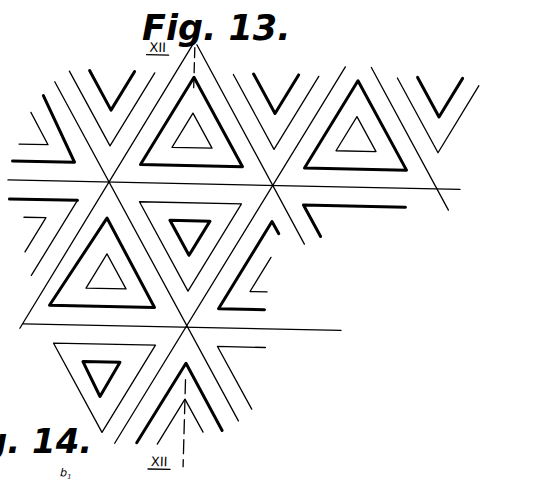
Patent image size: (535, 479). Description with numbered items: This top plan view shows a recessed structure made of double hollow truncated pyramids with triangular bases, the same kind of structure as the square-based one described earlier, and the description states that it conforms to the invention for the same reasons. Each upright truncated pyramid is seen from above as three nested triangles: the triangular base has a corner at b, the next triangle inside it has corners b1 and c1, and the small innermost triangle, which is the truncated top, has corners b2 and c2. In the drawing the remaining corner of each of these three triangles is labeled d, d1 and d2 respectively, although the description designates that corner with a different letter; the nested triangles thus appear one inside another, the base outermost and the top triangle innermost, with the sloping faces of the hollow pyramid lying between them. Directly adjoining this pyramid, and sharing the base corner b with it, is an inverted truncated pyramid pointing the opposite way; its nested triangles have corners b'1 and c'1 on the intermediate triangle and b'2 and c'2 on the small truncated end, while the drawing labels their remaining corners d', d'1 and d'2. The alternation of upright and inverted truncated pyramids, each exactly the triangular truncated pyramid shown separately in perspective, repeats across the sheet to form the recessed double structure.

The vertex of the triangular base of the truncated pyramid b is at (133, 230).
The vertex of the intermediate triangle of the truncated pyramid b1 is at (148, 182).
The vertex of the intermediate triangle of the truncated pyramid c1 is at (239, 182).
The apex lattice node d is at (185, 66).
The apex of first inset (thick) triangle d1 is at (193, 117).
The apex of second inset (small) triangle d2 is at (192, 124).
The vertex of the top triangle of the truncated pyramid b2 is at (143, 163).
The vertex of the top triangle of the truncated pyramid c2 is at (240, 163).
The vertex of the intermediate triangle of the inverted truncated pyramid b'1 is at (184, 239).
The vertex of the intermediate triangle of the inverted truncated pyramid c'1 is at (236, 198).
The vertex of the top triangle of the inverted truncated pyramid b'2 is at (172, 213).
The vertex of the top triangle of the inverted truncated pyramid c'2 is at (206, 214).
The lower lattice node d' is at (182, 320).
The apex of inset triangle in lower cell d'1 is at (184, 301).
The apex of small thick triangle in lower cell d'2 is at (189, 248).